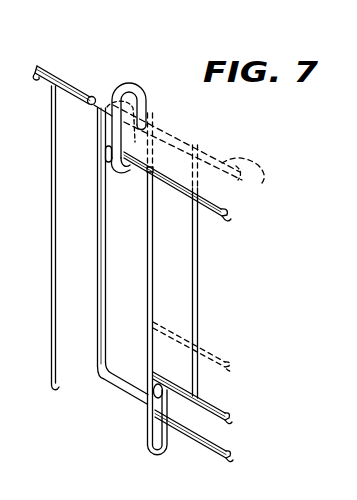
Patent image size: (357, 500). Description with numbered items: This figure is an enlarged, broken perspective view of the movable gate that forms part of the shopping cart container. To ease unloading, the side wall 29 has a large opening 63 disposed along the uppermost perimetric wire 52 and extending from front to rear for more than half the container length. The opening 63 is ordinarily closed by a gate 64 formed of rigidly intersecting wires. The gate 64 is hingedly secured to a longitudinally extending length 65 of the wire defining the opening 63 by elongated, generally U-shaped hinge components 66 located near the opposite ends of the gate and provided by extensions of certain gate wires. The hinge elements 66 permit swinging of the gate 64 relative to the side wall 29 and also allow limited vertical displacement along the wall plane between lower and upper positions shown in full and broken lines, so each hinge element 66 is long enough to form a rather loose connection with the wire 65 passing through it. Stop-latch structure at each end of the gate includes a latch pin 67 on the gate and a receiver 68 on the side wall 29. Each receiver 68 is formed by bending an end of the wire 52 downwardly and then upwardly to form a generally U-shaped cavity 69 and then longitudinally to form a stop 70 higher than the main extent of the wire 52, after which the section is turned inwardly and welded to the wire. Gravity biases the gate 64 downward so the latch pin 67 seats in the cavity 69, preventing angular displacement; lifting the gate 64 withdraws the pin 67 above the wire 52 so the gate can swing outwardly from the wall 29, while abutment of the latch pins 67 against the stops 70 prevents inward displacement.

The side wall 29 is at (53, 75).
The uppermost perimetric wire 52 is at (70, 88).
The stop 70 is at (126, 92).
The receiver 68 is at (118, 130).
The U-shaped cavity 69 is at (127, 139).
The latch pin 67 is at (106, 156).
The gate 64 is at (224, 206).
The opening 63 is at (110, 242).
The longitudinally extending wire length 65 is at (113, 388).
The U-shaped hinge component 66 is at (152, 427).